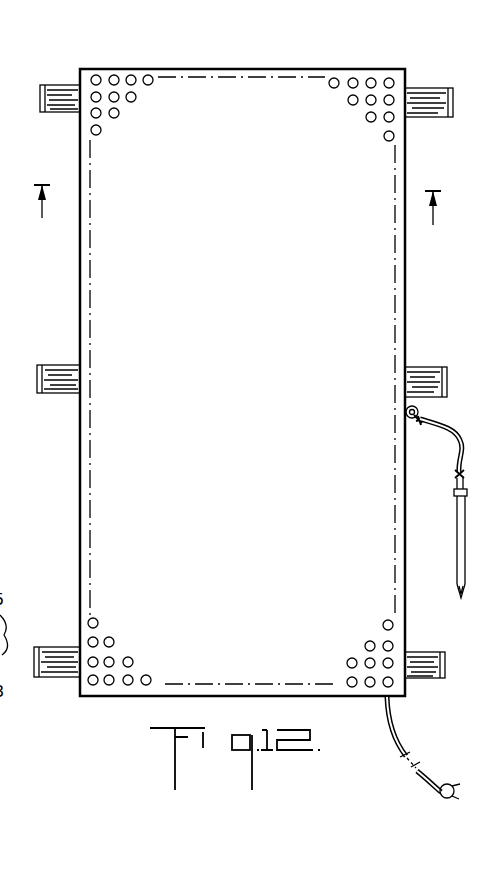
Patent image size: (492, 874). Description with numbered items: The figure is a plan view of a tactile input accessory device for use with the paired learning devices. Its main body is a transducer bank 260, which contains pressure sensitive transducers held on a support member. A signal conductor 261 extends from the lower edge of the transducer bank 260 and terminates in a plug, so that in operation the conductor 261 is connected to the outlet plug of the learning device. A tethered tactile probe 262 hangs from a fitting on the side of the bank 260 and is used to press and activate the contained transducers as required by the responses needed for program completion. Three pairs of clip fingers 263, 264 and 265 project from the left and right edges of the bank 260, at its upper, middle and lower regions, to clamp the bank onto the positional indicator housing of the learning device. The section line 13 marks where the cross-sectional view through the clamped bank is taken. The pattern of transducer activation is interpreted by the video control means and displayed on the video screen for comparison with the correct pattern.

The transducer bank 260 is at (68, 285).
The clip fingers 263 is at (60, 93).
The clip fingers 264 is at (56, 368).
The clip fingers 265 is at (60, 672).
The section line 13 is at (240, 193).
The tethered tactile probe 262 is at (461, 577).
The signal conductor 261 is at (430, 785).